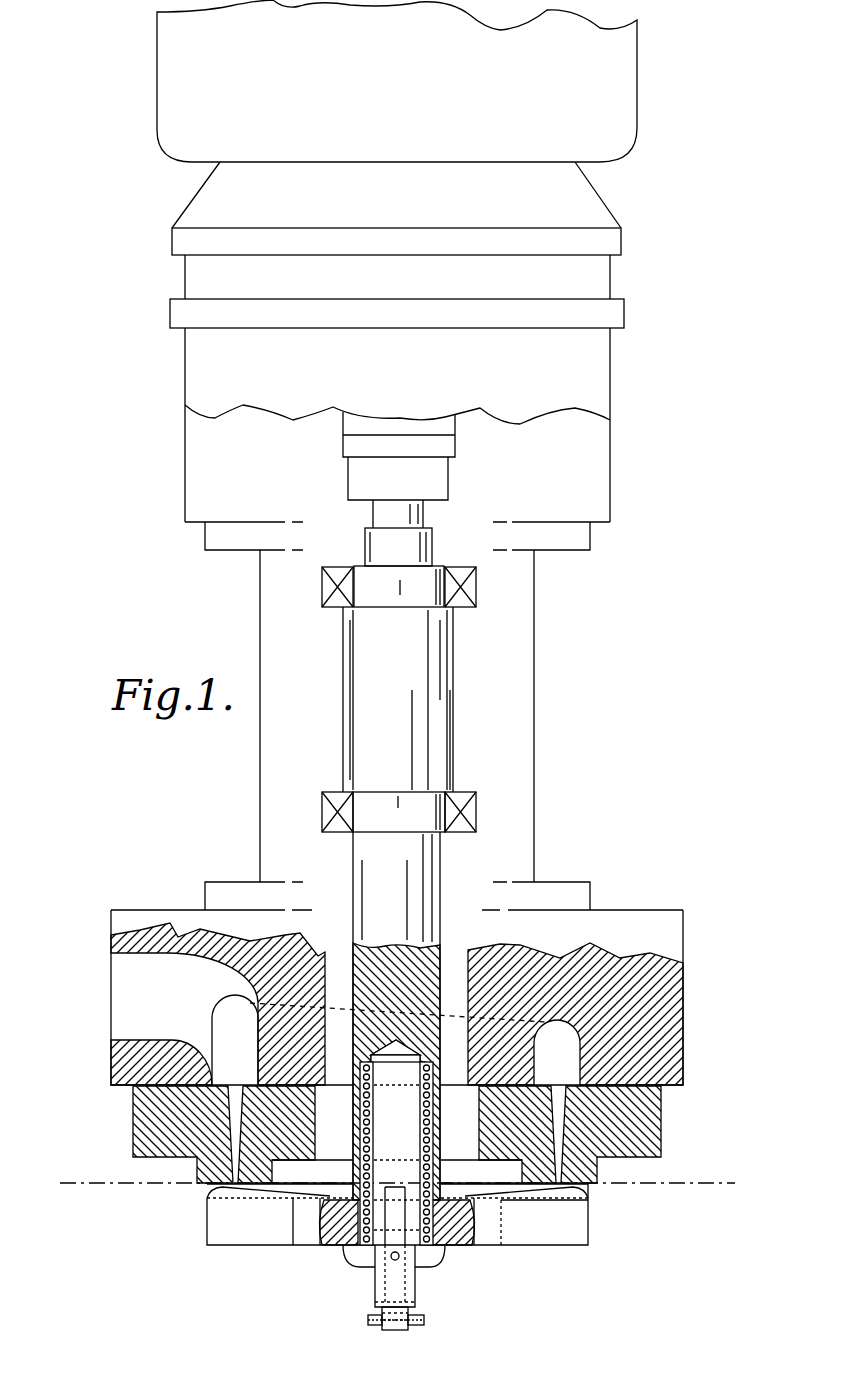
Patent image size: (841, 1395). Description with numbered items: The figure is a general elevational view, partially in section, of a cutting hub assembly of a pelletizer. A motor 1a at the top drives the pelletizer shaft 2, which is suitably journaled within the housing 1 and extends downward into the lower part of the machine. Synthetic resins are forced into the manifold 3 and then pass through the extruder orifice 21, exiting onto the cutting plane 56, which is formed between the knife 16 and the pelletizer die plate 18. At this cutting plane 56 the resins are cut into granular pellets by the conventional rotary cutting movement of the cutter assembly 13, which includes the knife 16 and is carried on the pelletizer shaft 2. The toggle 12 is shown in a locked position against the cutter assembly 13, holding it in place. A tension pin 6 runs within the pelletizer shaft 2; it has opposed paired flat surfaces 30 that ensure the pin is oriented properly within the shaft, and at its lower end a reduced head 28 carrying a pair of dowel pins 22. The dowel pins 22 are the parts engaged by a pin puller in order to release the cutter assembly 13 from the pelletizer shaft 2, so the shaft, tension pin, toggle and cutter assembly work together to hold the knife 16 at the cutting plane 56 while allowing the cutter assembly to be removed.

The motor 1a is at (603, 92).
The housing 1 is at (534, 650).
The pelletizer shaft 2 is at (412, 681).
The manifold 3 is at (648, 1008).
The extruder orifice 21 is at (233, 1102).
The pelletizer die plate 18 is at (643, 1147).
The cutting plane 56 is at (107, 1185).
The knife 16 is at (225, 1188).
The toggle 12 is at (358, 1258).
The cutter assembly 13 is at (548, 1237).
The tension pin 6 is at (412, 1283).
The opposed paired flat surfaces 30 is at (395, 1285).
The reduced head 28 is at (397, 1330).
The dowel pins 22 is at (424, 1322).